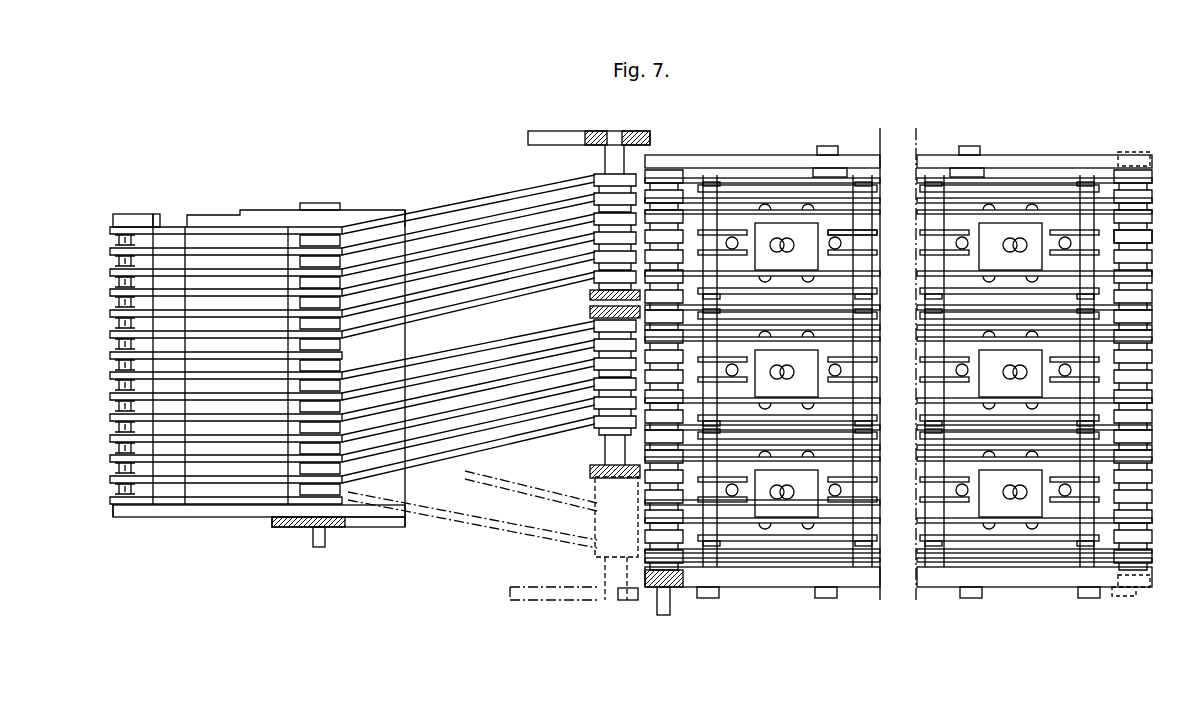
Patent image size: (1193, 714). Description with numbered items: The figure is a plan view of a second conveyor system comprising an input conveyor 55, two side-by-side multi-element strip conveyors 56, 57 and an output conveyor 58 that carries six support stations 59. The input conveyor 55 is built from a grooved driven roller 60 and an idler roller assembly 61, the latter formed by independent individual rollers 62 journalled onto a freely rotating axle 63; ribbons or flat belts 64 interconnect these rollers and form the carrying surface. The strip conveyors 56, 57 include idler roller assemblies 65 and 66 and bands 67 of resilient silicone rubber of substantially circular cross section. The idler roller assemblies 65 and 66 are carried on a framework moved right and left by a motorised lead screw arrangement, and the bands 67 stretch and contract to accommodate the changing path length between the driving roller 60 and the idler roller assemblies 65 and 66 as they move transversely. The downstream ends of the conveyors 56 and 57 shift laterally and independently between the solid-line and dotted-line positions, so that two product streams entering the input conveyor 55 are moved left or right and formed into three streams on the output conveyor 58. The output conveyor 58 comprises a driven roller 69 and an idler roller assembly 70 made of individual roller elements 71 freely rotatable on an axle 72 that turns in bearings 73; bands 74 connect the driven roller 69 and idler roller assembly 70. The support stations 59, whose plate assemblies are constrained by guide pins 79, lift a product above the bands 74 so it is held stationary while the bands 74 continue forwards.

The input conveyor 55 is at (296, 193).
The multi-element strip conveyor 56 is at (478, 197).
The multi-element strip conveyor 57 is at (497, 463).
The output conveyor 58 is at (807, 172).
The support station 59 is at (925, 182).
The grooved driven roller 60 is at (340, 222).
The idler roller assembly 61 is at (112, 202).
The individual roller 62 is at (132, 216).
The axle 63 is at (113, 303).
The flat belt 64 is at (240, 227).
The idler roller assembly 65 is at (607, 163).
The idler roller assembly 66 is at (612, 450).
The band 67 is at (522, 342).
The driven roller 69 is at (650, 565).
The idler roller assembly 70 is at (1152, 190).
The roller element 71 is at (1137, 235).
The axle 72 is at (1127, 590).
The bearing 73 is at (1157, 157).
The band 74 is at (661, 200).
The guide pin 79 is at (873, 237).